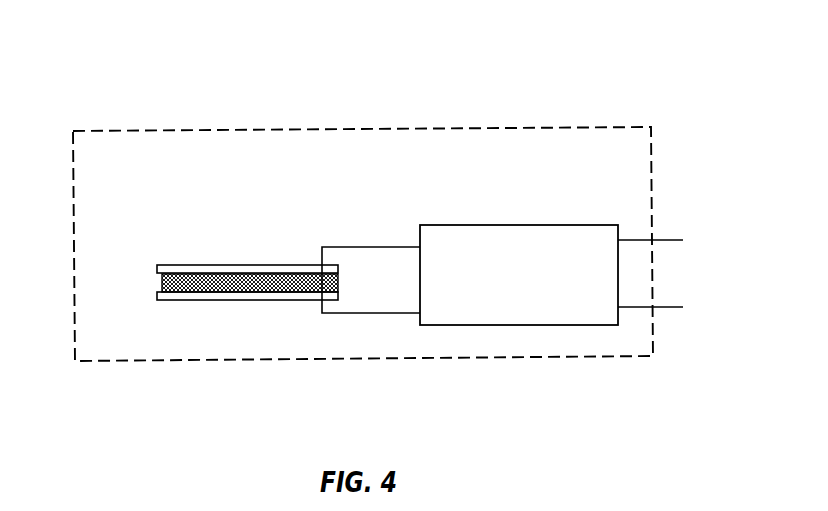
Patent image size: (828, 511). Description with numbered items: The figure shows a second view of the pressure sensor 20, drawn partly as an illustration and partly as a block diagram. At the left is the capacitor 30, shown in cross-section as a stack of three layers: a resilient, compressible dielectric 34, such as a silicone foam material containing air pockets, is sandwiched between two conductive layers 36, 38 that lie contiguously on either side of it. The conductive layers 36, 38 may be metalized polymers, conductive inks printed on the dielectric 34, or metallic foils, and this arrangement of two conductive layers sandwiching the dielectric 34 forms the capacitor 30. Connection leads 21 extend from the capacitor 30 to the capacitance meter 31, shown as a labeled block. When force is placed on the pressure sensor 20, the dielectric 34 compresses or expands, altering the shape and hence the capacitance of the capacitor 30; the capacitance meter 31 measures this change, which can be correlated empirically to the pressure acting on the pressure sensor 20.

The pressure sensor 20 is at (411, 123).
The capacitor 30 is at (221, 246).
The conductive layer 38 is at (221, 265).
The dielectric 34 is at (162, 283).
The conductive layer 36 is at (157, 295).
The connection leads 21 is at (354, 247).
The capacitance meter 31 is at (532, 311).